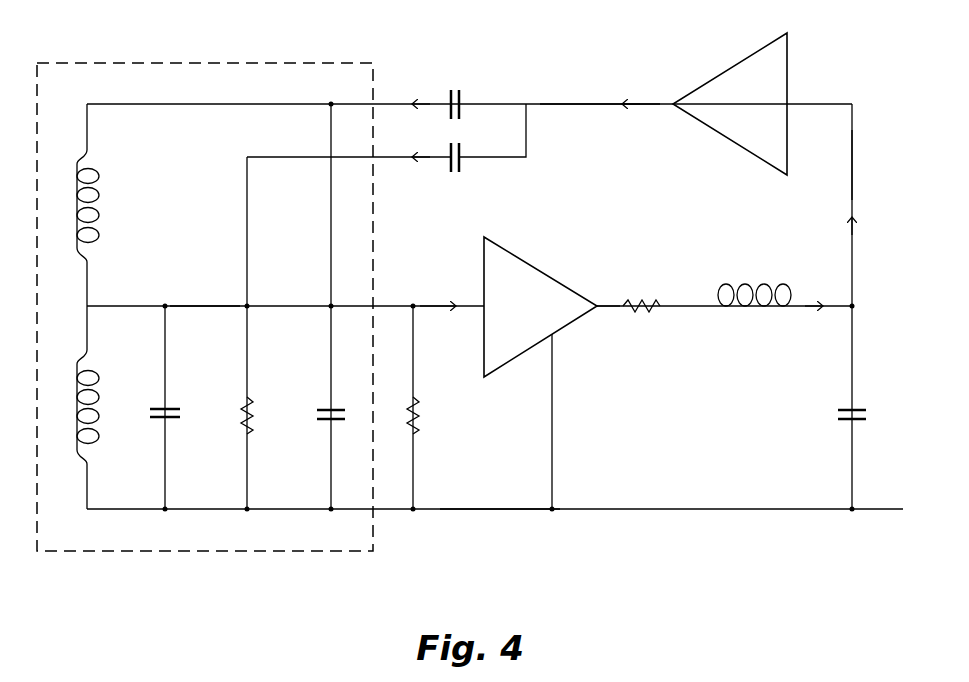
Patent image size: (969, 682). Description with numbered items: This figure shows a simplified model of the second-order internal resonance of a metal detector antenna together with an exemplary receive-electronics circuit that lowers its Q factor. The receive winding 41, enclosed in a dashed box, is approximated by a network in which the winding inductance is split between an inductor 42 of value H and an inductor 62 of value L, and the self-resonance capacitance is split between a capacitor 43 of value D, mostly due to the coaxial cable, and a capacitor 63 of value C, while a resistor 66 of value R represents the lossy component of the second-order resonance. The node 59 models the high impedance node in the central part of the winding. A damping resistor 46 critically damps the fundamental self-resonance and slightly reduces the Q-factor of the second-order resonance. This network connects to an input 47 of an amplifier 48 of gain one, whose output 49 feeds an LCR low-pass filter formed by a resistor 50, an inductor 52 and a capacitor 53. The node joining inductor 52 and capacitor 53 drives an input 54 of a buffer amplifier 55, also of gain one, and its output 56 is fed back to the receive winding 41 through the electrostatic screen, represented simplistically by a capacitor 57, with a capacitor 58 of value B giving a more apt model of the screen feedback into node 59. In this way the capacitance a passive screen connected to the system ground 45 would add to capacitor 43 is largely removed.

The receive winding 41 is at (230, 551).
The inductor 42 is at (100, 378).
The capacitor 43 is at (323, 410).
The system ground 45 is at (480, 510).
The damping resistor 46 is at (420, 412).
The input 47 is at (432, 306).
The amplifier 48 is at (544, 272).
The output 49 is at (609, 306).
The resistor 50 is at (648, 306).
The inductor 52 is at (746, 290).
The capacitor 53 is at (841, 410).
The input 54 is at (853, 162).
The buffer amplifier 55 is at (722, 68).
The output 56 is at (558, 104).
The capacitor 57 is at (462, 102).
The capacitor 58 is at (462, 161).
The node 59 is at (198, 305).
The inductor 62 is at (100, 193).
The capacitor 63 is at (170, 418).
The resistor 66 is at (253, 414).